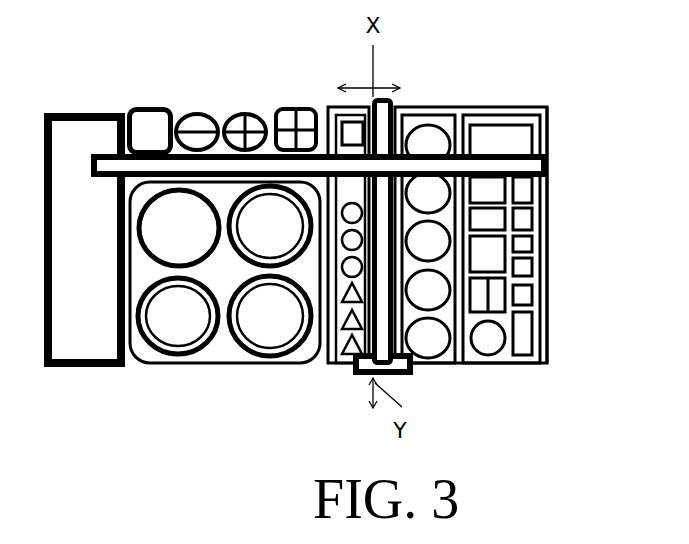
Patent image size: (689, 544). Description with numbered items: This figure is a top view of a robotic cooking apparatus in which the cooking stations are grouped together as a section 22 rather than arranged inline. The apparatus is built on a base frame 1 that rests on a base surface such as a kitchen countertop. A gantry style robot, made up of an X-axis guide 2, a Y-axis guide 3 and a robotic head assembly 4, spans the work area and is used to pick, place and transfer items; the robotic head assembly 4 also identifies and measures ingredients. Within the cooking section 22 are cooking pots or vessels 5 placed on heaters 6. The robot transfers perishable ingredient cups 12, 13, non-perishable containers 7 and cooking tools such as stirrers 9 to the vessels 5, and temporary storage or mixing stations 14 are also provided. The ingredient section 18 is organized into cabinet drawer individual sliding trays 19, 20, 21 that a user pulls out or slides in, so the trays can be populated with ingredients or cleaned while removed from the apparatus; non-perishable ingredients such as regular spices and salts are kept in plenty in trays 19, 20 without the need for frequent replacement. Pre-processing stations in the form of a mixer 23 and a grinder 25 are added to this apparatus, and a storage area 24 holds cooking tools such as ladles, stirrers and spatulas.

The base frame 1 is at (83, 113).
The X-axis guide 2 is at (548, 162).
The Y-axis guide 3 is at (397, 107).
The robotic head assembly 4 is at (355, 363).
The cooking pots or vessels 5 is at (180, 358).
The heaters 6 is at (148, 344).
The non-perishable containers 7 is at (532, 218).
The stirrers 9 is at (348, 352).
The perishable ingredient cup 12 is at (518, 365).
The perishable ingredient cup 13 is at (488, 365).
The temporary storage or mixing stations 14 is at (150, 108).
The ingredient section 18 is at (548, 196).
The sliding tray 19 is at (333, 364).
The sliding tray 20 is at (426, 365).
The sliding tray 21 is at (545, 365).
The cooking station section 22 is at (193, 364).
The mixer 23 is at (215, 118).
The storage area 24 is at (292, 107).
The grinder 25 is at (243, 112).